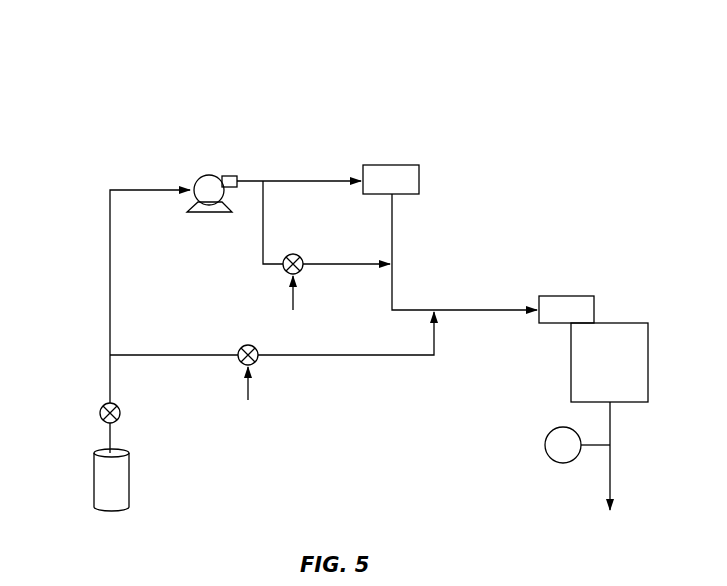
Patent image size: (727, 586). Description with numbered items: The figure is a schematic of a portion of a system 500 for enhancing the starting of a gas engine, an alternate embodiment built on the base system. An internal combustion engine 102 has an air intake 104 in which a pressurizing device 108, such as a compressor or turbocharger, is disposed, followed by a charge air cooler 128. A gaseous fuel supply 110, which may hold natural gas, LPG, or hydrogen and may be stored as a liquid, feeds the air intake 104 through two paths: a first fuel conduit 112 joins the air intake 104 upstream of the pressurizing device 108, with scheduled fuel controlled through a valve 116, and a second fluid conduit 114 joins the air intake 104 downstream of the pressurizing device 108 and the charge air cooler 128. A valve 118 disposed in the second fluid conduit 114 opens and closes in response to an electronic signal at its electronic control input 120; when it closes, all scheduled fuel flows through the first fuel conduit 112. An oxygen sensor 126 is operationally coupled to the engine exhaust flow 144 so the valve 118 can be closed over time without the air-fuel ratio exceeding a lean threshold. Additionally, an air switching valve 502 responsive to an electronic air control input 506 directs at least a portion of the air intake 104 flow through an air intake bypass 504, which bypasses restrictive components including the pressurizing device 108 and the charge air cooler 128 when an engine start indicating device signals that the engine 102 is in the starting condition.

The system 500 is at (108, 74).
The internal combustion engine 102 is at (593, 349).
The air intake 104 is at (143, 190).
The pressurizing device 108 is at (209, 174).
The gaseous fuel supply 110 is at (94, 481).
The first fuel conduit 112 is at (110, 283).
The second fluid conduit 114 is at (183, 355).
The valve 116 is at (100, 413).
The valve 118 is at (244, 345).
The electronic control input 120 is at (246, 392).
The oxygen sensor 126 is at (563, 427).
The charge air cooler 128 is at (393, 165).
The engine exhaust flow 144 is at (612, 420).
The air switching valve 502 is at (300, 275).
The air intake bypass 504 is at (263, 230).
The electronic air control input 506 is at (290, 300).